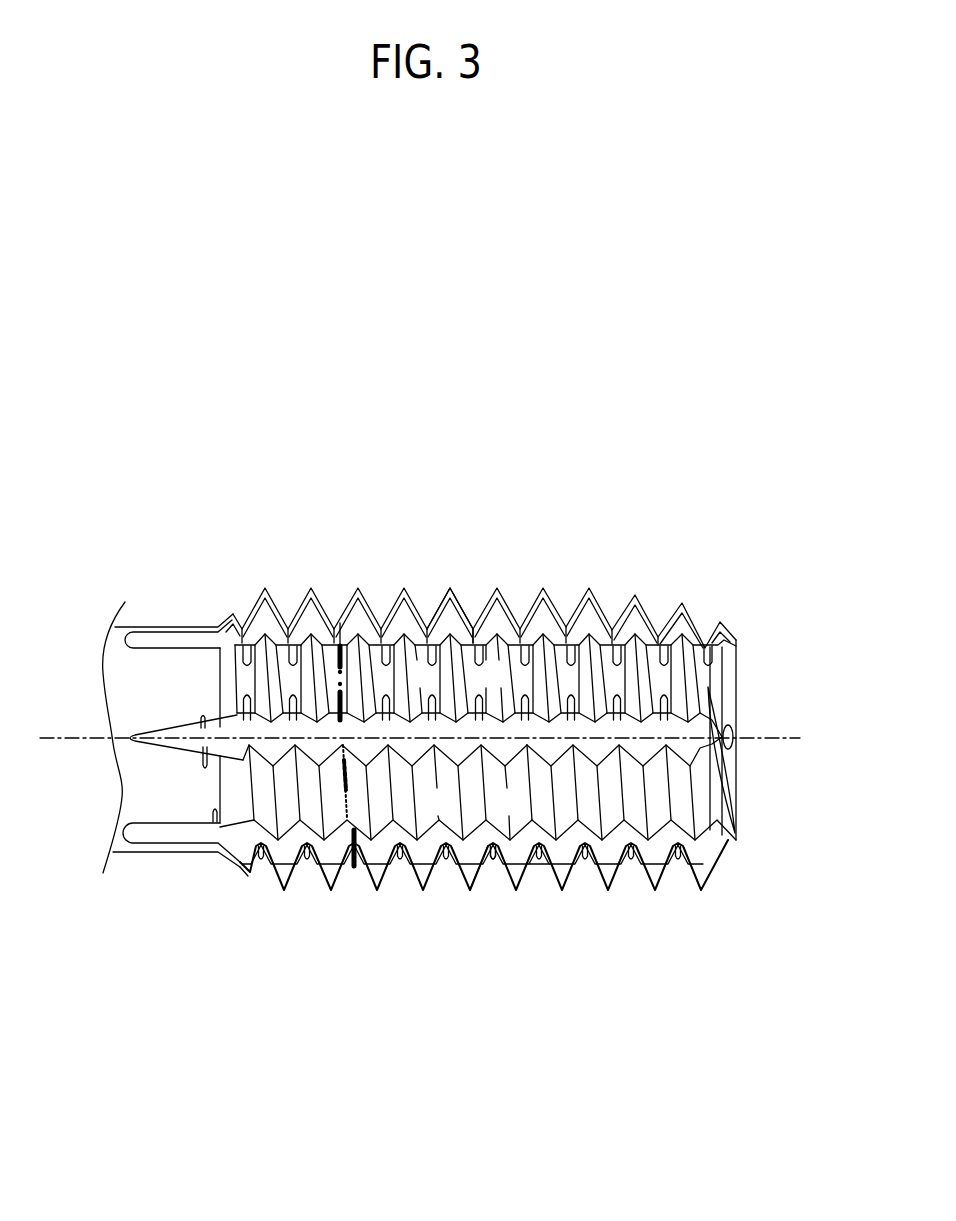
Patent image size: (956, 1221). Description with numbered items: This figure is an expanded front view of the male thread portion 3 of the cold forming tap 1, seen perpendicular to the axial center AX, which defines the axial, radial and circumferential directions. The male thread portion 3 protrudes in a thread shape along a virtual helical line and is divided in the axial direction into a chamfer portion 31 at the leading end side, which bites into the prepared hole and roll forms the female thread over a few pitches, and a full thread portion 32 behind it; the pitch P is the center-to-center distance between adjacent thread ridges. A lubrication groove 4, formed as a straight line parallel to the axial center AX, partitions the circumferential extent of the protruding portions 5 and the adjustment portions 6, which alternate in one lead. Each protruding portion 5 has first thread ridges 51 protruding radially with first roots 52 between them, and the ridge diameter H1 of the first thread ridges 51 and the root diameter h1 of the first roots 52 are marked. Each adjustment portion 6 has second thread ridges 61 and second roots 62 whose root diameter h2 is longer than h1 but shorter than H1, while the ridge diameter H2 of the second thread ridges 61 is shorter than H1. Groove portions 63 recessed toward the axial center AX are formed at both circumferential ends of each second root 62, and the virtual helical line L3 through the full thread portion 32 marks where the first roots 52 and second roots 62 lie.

The cold forming tap 1 is at (627, 460).
The male thread portion 3 is at (770, 587).
The lubrication groove 4 is at (165, 833).
The protruding portion 5 is at (352, 580).
The adjustment portion 6 is at (692, 893).
The chamfer portion 31 is at (670, 893).
The full thread portion 32 is at (422, 907).
The first thread ridge 51 is at (450, 590).
The first root 52 is at (473, 625).
The second thread ridge 61 is at (485, 872).
The second root 62 is at (543, 868).
The groove portion 63 is at (483, 862).
The pitch P is at (542, 593).
The ridge diameter of the first thread ridge H1 is at (450, 590).
The root diameter of the first root h1 is at (473, 740).
The ridge diameter of the second thread ridge H2 is at (470, 887).
The root diameter of the second root h2 is at (493, 740).
The virtual helical line L3 is at (365, 839).
The axial center AX is at (441, 742).